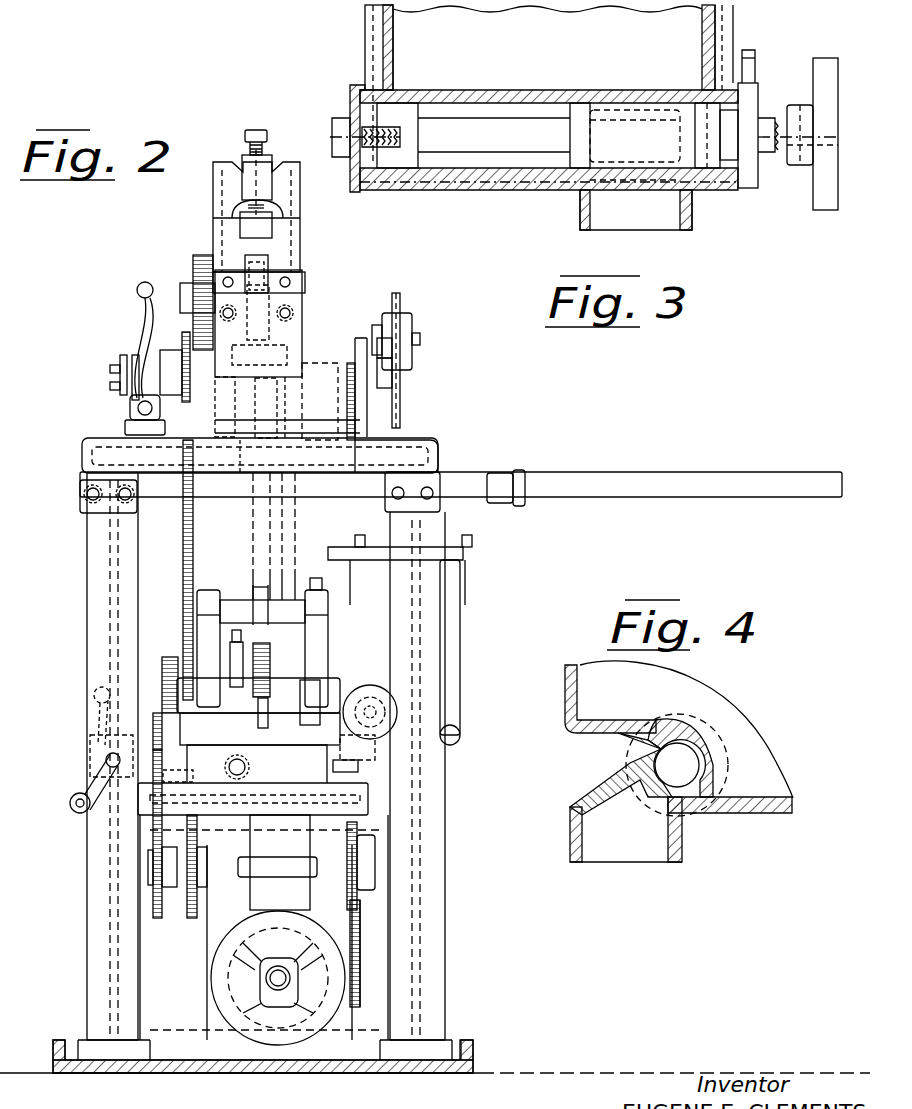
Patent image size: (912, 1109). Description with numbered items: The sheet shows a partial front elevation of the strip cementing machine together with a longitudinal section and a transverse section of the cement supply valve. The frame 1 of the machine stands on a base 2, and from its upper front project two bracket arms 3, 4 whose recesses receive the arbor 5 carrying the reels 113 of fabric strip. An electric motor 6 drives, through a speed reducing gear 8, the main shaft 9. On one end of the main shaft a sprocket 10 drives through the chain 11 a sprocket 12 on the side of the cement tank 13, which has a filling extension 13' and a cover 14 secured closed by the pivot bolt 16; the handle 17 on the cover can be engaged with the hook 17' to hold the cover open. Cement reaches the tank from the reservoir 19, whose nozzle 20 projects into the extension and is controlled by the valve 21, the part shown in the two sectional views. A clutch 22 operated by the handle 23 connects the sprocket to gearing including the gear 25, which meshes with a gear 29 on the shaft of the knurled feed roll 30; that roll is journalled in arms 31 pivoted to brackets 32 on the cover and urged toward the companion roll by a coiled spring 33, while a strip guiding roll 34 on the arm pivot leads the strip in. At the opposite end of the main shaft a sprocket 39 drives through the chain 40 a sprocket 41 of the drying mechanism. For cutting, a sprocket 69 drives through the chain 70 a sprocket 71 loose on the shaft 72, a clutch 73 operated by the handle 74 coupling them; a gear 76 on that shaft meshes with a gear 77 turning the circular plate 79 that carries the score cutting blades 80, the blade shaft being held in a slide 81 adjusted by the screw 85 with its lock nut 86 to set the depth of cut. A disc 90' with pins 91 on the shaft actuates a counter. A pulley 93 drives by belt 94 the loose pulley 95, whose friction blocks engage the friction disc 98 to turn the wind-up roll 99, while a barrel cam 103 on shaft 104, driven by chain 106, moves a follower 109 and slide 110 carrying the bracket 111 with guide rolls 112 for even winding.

In FIG. 2, the frame 1 is at (446, 840).
In FIG. 2, the base 2 is at (473, 1060).
In FIG. 2, the bracket arm 3 is at (82, 500).
In FIG. 2, the bracket arm 4 is at (500, 505).
In FIG. 2, the arbor 5 is at (619, 476).
In FIG. 2, the electric motor 6 is at (212, 975).
In FIG. 2, the speed reducing gear 8 is at (300, 830).
In FIG. 2, the main shaft 9 is at (372, 878).
In FIG. 2, the sprocket 10 is at (170, 887).
In FIG. 2, the chain 11 is at (153, 845).
In FIG. 2, the sprocket 12 is at (148, 740).
In FIG. 2, the cement tank 13 is at (253, 780).
In FIG. 2, the filling extension 13' is at (372, 770).
In FIG. 2, the cover 14 is at (312, 725).
In FIG. 2, the pivot bolt 16 is at (270, 730).
In FIG. 2, the handle 17 is at (260, 731).
In FIG. 2, the hook 17' is at (170, 570).
In FIG. 3, the reservoir 19 is at (368, 38).
In FIG. 4, the reservoir 19 is at (566, 705).
In FIG. 2, the reservoir 19 is at (455, 640).
In FIG. 3, the nozzle 20 is at (686, 210).
In FIG. 4, the nozzle 20 is at (570, 847).
In FIG. 2, the nozzle 20 is at (355, 745).
In FIG. 3, the valve 21 is at (577, 172).
In FIG. 4, the valve 21 is at (628, 768).
In FIG. 2, the valve 21 is at (375, 688).
In FIG. 2, the clutch 22 is at (95, 740).
In FIG. 2, the handle 23 is at (82, 770).
In FIG. 2, the gear 25 is at (185, 800).
In FIG. 2, the gear 29 is at (162, 675).
In FIG. 2, the feed roll 30 is at (270, 685).
In FIG. 2, the arm 31 is at (240, 636).
In FIG. 2, the bracket 32 is at (198, 640).
In FIG. 2, the coiled spring 33 is at (232, 666).
In FIG. 2, the strip guiding roll 34 is at (253, 593).
In FIG. 2, the sprocket 39 is at (360, 845).
In FIG. 2, the chain 40 is at (358, 908).
In FIG. 2, the sprocket 41 is at (360, 978).
In FIG. 2, the sprocket 69 is at (204, 887).
In FIG. 2, the chain 70 is at (197, 845).
In FIG. 2, the sprocket 71 is at (174, 350).
In FIG. 2, the shaft 72 is at (375, 388).
In FIG. 2, the clutch 73 is at (135, 355).
In FIG. 2, the handle 74 is at (138, 290).
In FIG. 2, the gear 76 is at (222, 407).
In FIG. 2, the gear 77 is at (200, 258).
In FIG. 2, the circular plate 79 is at (265, 268).
In FIG. 2, the score cutting blade 80 is at (258, 258).
In FIG. 2, the slide 81 is at (300, 215).
In FIG. 2, the screw 85 is at (265, 135).
In FIG. 2, the lock nut 86 is at (272, 160).
In FIG. 2, the disc 90' is at (109, 365).
In FIG. 2, the pin 91 is at (110, 385).
In FIG. 2, the pulley 93 is at (400, 410).
In FIG. 2, the belt 94 is at (400, 375).
In FIG. 2, the pulley 95 is at (398, 305).
In FIG. 2, the friction disc 98 is at (384, 316).
In FIG. 2, the wind-up roll 99 is at (277, 377).
In FIG. 2, the barrel cam 103 is at (305, 450).
In FIG. 2, the shaft 104 is at (210, 440).
In FIG. 2, the chain 106 is at (380, 458).
In FIG. 2, the follower 109 is at (255, 380).
In FIG. 2, the slide 110 is at (300, 365).
In FIG. 2, the bracket 111 is at (275, 352).
In FIG. 2, the guide roll 112 is at (270, 303).
In FIG. 2, the reel 113 is at (285, 518).